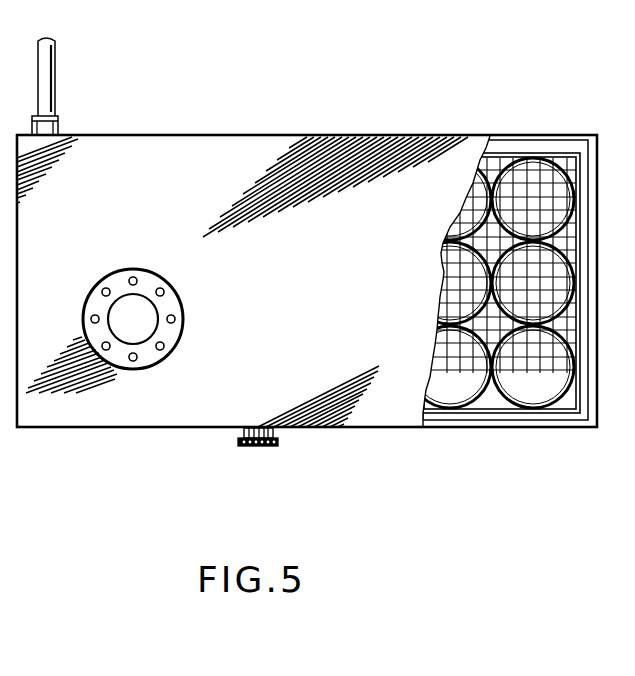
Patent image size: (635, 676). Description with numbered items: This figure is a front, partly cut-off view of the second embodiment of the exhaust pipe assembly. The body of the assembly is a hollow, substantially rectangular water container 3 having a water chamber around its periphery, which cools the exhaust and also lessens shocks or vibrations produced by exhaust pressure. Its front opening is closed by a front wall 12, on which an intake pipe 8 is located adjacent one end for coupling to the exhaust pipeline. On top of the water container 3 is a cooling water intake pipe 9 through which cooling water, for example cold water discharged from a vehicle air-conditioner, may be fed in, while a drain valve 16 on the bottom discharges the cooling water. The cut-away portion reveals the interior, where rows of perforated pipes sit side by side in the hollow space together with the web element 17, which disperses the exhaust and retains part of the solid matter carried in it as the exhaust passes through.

The water container 3 is at (503, 143).
The intake pipe 8 is at (118, 357).
The cooling water intake pipe 9 is at (50, 68).
The front wall 12 is at (247, 152).
The drain valve 16 is at (252, 446).
The web element 17 is at (573, 155).